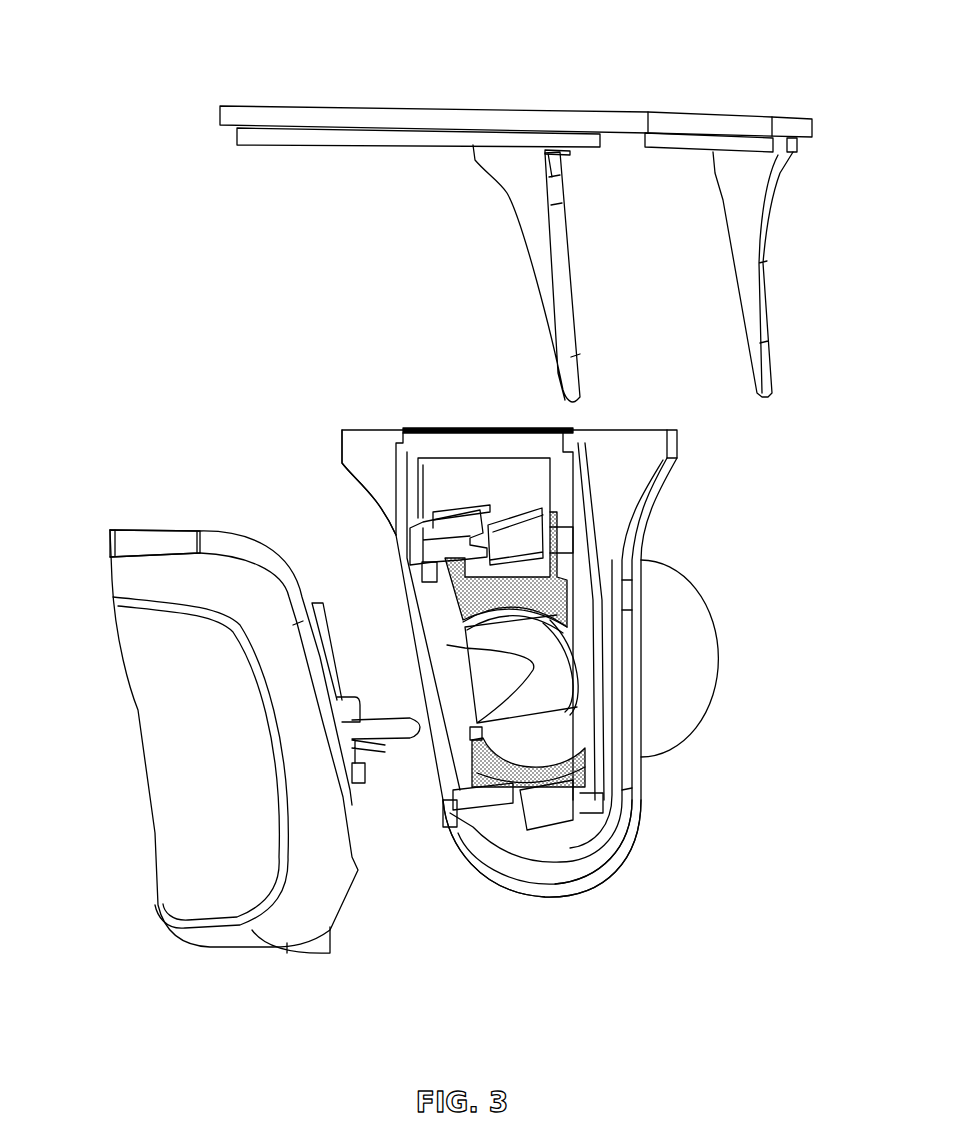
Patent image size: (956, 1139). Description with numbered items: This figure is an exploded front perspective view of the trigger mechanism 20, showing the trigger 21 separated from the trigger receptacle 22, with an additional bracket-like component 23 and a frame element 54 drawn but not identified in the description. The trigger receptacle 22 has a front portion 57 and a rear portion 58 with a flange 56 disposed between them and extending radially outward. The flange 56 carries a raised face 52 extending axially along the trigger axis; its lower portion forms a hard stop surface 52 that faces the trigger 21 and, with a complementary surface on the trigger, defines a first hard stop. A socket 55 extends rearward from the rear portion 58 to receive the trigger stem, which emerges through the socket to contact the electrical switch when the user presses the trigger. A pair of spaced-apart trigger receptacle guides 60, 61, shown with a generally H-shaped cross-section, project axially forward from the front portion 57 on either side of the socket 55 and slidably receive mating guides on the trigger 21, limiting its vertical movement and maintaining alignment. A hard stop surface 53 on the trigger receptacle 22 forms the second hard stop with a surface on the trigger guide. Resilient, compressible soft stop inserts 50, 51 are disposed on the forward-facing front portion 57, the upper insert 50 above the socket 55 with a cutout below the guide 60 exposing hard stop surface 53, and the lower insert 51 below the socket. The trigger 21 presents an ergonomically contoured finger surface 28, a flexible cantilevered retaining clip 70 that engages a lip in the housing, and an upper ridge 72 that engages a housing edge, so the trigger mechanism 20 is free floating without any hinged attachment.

The trigger mechanism 20 is at (190, 40).
The trigger 21 is at (110, 682).
The trigger receptacle 22 is at (738, 666).
The mounting bracket 23 is at (717, 112).
The finger surface 28 is at (170, 781).
The upper soft stop insert 50 is at (585, 583).
The lower soft stop insert 51 is at (567, 773).
The raised face / hard stop surface 52 is at (533, 852).
The hard stop surface 53 is at (563, 563).
The housing frame 54 is at (567, 487).
The socket 55 is at (500, 747).
The flange 56 is at (630, 548).
The front portion 57 is at (383, 535).
The rear portion 58 is at (660, 833).
The trigger receptacle guide 60 is at (468, 530).
The trigger receptacle guide 61 is at (497, 807).
The retaining clip 70 is at (300, 957).
The upper ridge 72 is at (160, 533).